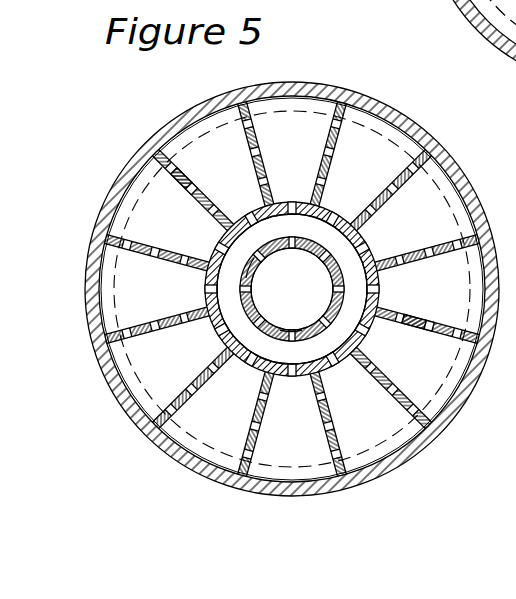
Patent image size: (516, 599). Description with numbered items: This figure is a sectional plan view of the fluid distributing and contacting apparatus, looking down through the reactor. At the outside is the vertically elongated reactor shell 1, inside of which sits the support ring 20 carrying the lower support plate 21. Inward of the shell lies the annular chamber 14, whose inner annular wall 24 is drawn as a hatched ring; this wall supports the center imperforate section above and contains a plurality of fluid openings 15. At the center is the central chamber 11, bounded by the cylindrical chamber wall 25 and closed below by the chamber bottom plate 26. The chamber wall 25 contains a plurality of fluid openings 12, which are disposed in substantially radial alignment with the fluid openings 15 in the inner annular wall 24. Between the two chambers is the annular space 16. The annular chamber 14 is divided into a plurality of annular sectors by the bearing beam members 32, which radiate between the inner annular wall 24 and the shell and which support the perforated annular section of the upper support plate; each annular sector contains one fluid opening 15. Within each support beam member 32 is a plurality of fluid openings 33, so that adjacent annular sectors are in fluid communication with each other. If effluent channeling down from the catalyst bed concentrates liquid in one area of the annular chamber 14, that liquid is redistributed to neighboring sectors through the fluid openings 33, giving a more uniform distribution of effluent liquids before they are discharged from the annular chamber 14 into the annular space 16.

The reactor shell 1 is at (103, 352).
The central chamber 11 is at (314, 308).
The fluid openings 12 is at (292, 279).
The annular chamber 14 is at (148, 306).
The fluid openings 15 is at (365, 242).
The annular space 16 is at (342, 322).
The support ring 20 is at (393, 435).
The lower support plate 21 is at (108, 314).
The inner annular wall 24 is at (292, 294).
The chamber wall 25 is at (273, 269).
The chamber bottom plate 26 is at (291, 331).
The bearing beam members 32 is at (299, 230).
The fluid openings 33 is at (445, 306).